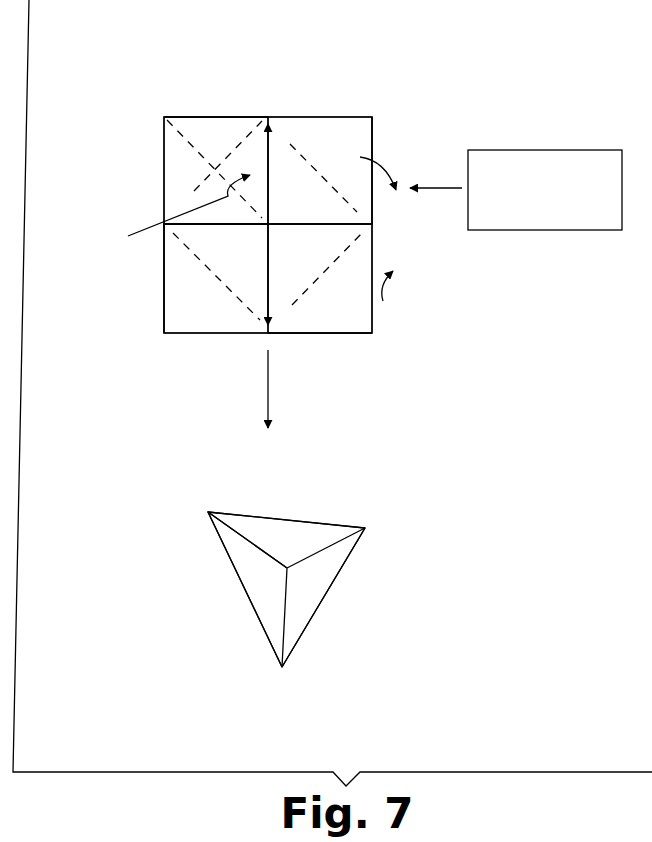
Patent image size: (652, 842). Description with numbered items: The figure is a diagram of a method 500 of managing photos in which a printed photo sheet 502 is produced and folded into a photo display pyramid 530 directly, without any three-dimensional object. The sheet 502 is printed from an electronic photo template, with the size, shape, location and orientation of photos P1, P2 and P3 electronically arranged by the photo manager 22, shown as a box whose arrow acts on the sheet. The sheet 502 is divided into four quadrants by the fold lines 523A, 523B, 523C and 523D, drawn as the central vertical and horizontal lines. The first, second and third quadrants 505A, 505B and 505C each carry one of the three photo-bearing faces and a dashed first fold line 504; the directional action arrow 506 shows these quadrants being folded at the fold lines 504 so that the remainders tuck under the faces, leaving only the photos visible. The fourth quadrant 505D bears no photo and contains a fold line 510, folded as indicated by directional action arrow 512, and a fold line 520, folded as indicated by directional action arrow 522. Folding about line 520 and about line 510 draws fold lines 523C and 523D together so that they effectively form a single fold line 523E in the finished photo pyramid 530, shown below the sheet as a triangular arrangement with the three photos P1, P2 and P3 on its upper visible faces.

The photo manager 22 is at (525, 231).
The method 500 is at (454, 107).
The printed photo sheet 502 is at (216, 110).
The first fold lines 504 is at (315, 162).
The first quadrant 505A is at (164, 314).
The second quadrant 505B is at (373, 323).
The third quadrant 505C is at (372, 147).
The fourth quadrant 505D is at (162, 130).
The directional action arrow 506 is at (348, 303).
The fold line 510 is at (185, 200).
The directional action arrow 512 is at (188, 158).
The fold line 520 is at (178, 136).
The directional action arrow 522 is at (165, 214).
The fold line 523A is at (281, 304).
The fold line 523B is at (343, 224).
The fold line 523C is at (135, 256).
The fold line 523D is at (270, 144).
The single fold line 523E is at (243, 538).
The photo display pyramid 530 is at (341, 588).